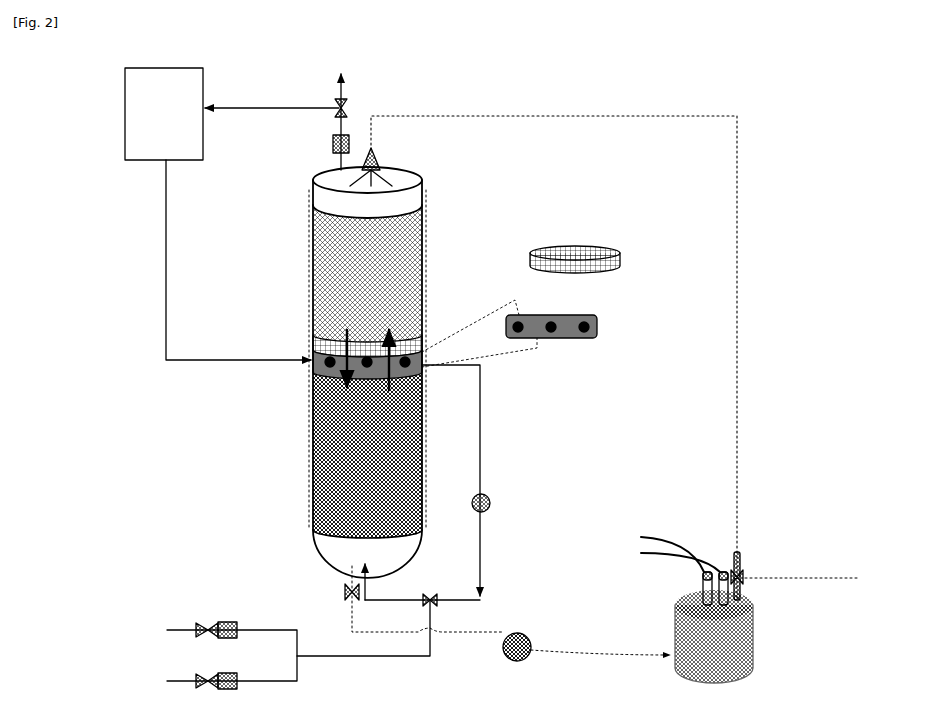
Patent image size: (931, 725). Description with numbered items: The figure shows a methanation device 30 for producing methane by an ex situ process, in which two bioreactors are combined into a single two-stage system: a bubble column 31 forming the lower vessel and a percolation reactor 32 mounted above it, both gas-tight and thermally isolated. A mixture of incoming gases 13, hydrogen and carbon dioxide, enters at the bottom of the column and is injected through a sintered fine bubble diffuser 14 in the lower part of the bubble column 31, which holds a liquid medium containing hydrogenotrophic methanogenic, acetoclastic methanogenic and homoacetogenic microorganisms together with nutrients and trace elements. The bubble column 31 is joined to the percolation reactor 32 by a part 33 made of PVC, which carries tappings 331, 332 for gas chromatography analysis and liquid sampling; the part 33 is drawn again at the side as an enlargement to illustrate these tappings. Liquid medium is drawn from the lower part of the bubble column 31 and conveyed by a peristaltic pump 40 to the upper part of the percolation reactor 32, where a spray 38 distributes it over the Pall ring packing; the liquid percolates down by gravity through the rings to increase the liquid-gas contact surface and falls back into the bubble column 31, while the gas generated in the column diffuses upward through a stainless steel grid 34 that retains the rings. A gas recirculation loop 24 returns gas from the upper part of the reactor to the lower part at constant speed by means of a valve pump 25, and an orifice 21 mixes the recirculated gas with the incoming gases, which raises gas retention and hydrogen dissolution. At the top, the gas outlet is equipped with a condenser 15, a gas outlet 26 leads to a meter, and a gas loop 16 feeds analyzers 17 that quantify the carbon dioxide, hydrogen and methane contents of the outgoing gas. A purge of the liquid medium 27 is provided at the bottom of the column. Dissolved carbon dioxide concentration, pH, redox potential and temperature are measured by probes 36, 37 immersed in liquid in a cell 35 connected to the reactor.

The incoming gases 13 is at (315, 652).
The sintered fine bubble diffuser 14 is at (345, 546).
The condenser 15 is at (331, 143).
The gas loop 16 is at (275, 100).
The analyzers 17 is at (218, 214).
The orifice 21 is at (430, 592).
The gas recirculation loop 24 is at (492, 452).
The valve pump 25 is at (496, 503).
The gas outlet 26 is at (364, 83).
The purge of the liquid medium 27 is at (343, 592).
The methanation device 30 is at (88, 408).
The bubble column 31 is at (377, 458).
The percolation reactor 32 is at (372, 306).
The part made of PVC 33 is at (311, 369).
The tapping 331 is at (595, 340).
The tapping 332 is at (557, 333).
The stainless steel grid 34 is at (634, 263).
The cell 35 is at (755, 664).
The probe 36 is at (722, 600).
The probe 37 is at (709, 605).
The spray 38 is at (380, 177).
The peristaltic pump 40 is at (517, 630).